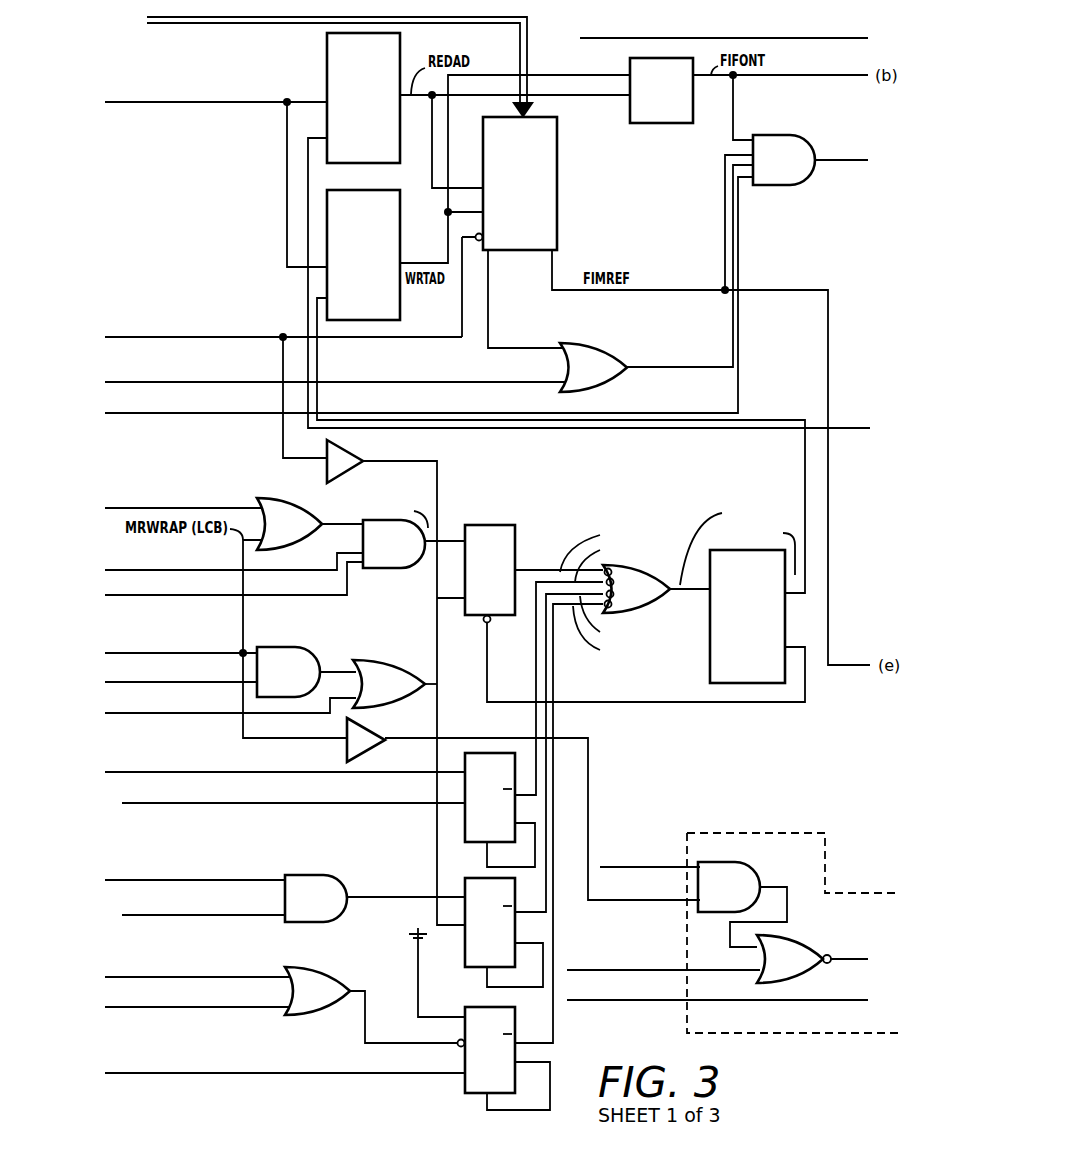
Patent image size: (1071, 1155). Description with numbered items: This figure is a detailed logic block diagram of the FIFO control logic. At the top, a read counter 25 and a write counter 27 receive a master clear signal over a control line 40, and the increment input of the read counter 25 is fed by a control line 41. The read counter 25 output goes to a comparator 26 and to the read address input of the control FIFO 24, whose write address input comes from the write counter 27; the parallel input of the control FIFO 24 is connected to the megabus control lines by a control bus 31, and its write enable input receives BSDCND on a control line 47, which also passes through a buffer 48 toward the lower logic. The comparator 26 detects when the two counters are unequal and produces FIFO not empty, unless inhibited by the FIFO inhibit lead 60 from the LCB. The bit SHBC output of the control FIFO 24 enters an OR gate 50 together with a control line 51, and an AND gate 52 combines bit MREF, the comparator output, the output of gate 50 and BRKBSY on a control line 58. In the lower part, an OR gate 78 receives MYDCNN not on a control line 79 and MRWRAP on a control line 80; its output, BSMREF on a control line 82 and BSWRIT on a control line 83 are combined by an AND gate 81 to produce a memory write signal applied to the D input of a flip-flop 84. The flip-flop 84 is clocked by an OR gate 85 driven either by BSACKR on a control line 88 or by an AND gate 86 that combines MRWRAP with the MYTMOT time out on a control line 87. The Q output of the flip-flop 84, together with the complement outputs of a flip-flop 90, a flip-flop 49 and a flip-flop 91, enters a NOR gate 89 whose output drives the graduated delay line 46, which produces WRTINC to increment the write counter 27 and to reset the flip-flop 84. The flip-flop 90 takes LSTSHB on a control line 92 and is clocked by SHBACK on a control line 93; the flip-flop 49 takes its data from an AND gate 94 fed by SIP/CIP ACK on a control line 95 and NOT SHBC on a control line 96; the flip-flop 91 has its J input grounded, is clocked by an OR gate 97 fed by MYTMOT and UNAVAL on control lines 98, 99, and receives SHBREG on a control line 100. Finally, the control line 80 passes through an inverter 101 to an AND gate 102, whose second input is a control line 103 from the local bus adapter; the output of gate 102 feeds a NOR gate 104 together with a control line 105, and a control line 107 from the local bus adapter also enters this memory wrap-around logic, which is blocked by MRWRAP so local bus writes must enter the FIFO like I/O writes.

The control FIFO 24 is at (558, 196).
The read counter 25 is at (327, 64).
The comparator 26 is at (678, 122).
The write counter 27 is at (400, 238).
The control bus 31 is at (276, 24).
The control line 40 is at (213, 104).
The control line 41 is at (308, 162).
The graduated delay line 46 is at (710, 670).
The control line 47 is at (268, 336).
The buffer 48 is at (365, 452).
The flip-flop 49 is at (509, 972).
The OR gate 50 is at (603, 345).
The control line 51 is at (372, 380).
The AND gate 52 is at (808, 135).
The control line 58 is at (670, 413).
The FIFO inhibit line 60 is at (750, 38).
The OR gate 78 is at (306, 510).
The control line 79 is at (246, 507).
The control line 80 is at (125, 653).
The AND gate 81 is at (390, 570).
The control line 82 is at (278, 570).
The control line 83 is at (352, 575).
The D-type flip-flop 84 is at (514, 524).
The OR gate 85 is at (412, 660).
The AND gate 86 is at (298, 648).
The control line 87 is at (122, 690).
The control line 88 is at (262, 714).
The NOR gate 89 is at (663, 606).
The D-type flip-flop 90 is at (504, 852).
The D-type flip-flop 91 is at (515, 1072).
The control line 92 is at (270, 772).
The control line 93 is at (270, 803).
The AND gate 94 is at (310, 872).
The control line 95 is at (262, 880).
The control line 96 is at (266, 915).
The OR gate 97 is at (332, 966).
The control line 98 is at (268, 977).
The control line 99 is at (262, 1007).
The control line 100 is at (347, 1072).
The inverter 101 is at (385, 740).
The AND gate 102 is at (750, 868).
The control line 103 is at (676, 866).
The NOR gate 104 is at (800, 935).
The control line 105 is at (693, 968).
The control line 107 is at (748, 1000).